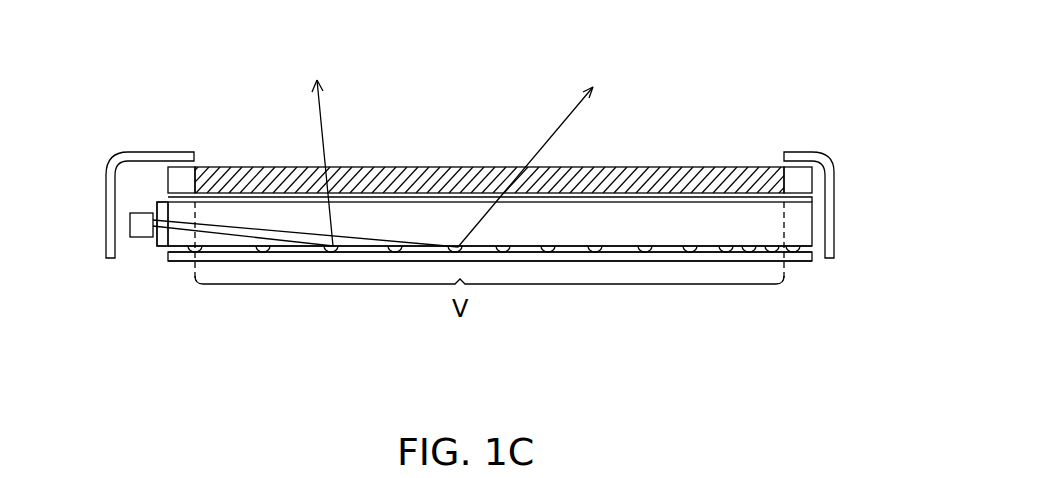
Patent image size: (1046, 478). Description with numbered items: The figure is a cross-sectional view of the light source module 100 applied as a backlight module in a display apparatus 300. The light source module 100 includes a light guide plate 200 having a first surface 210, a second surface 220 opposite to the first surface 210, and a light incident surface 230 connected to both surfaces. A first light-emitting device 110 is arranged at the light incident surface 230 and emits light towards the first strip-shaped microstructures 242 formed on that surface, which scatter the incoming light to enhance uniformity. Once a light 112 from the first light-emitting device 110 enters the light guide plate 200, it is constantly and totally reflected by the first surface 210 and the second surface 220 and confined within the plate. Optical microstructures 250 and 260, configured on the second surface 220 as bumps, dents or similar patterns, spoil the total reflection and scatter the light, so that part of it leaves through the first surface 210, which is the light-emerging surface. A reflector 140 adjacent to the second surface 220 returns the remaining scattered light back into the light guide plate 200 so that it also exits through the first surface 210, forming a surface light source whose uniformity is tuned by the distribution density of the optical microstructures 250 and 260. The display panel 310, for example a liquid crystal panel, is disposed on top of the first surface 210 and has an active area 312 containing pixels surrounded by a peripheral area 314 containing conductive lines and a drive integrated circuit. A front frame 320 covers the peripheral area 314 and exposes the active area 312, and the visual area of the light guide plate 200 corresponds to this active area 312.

The light source module 100 is at (807, 278).
The first light-emitting device 110 is at (140, 213).
The light 112 is at (228, 237).
The reflector 140 is at (522, 261).
The light guide plate 200 is at (180, 238).
The first surface 210 is at (712, 191).
The second surface 220 is at (653, 263).
The light incident surface 230 is at (148, 255).
The first strip-shaped microstructures 242 is at (163, 202).
The optical microstructures 250 is at (397, 250).
The optical microstructures 260 is at (592, 252).
The display apparatus 300 is at (849, 400).
The display panel 310 is at (490, 118).
The active area 312 is at (443, 167).
The peripheral area 314 is at (187, 182).
The front frame 320 is at (178, 160).